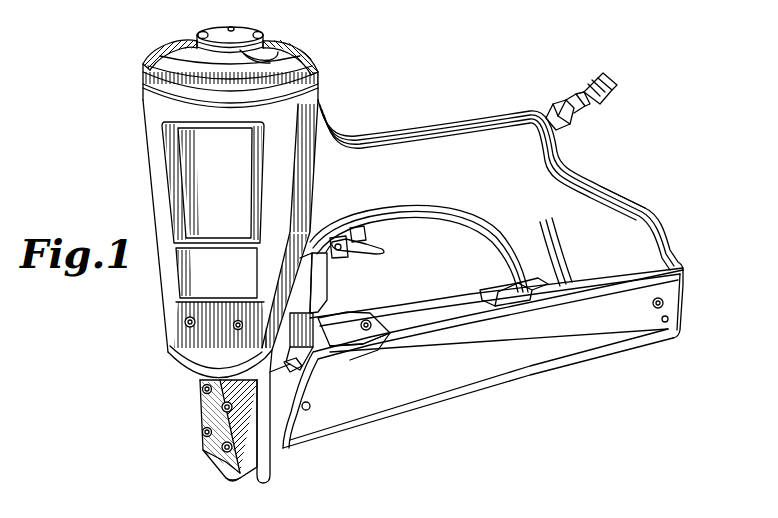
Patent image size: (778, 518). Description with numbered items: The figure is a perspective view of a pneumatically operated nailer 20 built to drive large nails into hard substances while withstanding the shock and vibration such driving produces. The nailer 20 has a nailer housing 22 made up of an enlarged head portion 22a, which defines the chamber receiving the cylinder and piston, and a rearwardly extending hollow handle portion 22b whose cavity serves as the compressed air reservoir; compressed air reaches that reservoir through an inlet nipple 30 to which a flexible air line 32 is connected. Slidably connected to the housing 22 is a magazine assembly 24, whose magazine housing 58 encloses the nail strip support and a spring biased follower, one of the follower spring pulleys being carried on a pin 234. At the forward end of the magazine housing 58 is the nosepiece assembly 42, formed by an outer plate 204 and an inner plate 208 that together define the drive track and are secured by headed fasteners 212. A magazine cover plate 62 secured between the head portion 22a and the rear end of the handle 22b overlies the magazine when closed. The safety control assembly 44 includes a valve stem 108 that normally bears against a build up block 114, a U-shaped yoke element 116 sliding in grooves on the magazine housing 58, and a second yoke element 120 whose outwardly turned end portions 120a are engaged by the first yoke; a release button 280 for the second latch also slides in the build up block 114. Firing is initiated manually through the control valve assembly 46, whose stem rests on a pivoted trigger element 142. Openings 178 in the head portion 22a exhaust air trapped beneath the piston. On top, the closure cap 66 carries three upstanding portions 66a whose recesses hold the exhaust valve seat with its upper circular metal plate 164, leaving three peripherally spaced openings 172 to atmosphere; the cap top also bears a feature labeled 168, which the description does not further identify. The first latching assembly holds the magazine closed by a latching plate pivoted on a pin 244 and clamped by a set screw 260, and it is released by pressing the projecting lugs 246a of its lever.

The pneumatically operated nailer 20 is at (458, 76).
The nailer housing 22 is at (370, 137).
The enlarged head portion 22a is at (152, 154).
The hollow handle portion 22b is at (622, 208).
The magazine assembly 24 is at (620, 355).
The inlet nipple 30 is at (548, 113).
The flexible air line 32 is at (603, 100).
The nosepiece assembly 42 is at (194, 414).
The safety control assembly 44 is at (338, 313).
The control valve assembly 46 is at (385, 236).
The magazine housing 58 is at (516, 371).
The magazine cover plate 62 is at (484, 276).
The closure cap 66 is at (175, 97).
The upstanding portions 66a is at (182, 44).
The valve stem 108 is at (324, 254).
The build up block 114 is at (360, 343).
The U-shaped yoke element 116 is at (270, 475).
The second U-shaped yoke element 120 is at (328, 288).
The outwardly turned end portions 120a is at (294, 367).
The trigger element 142 is at (380, 248).
The upper circular metal plate 164 is at (248, 30).
The deflector openings 168 is at (231, 27).
The peripherally spaced openings 172 is at (278, 50).
The openings 178 is at (186, 321).
The outer plate 204 is at (216, 467).
The inner plate 208 is at (236, 480).
The headed fasteners 212 is at (203, 399).
The pin 234 is at (311, 405).
The pin 244 is at (670, 318).
The projecting lugs 246a is at (520, 283).
The set screw 260 is at (666, 302).
The release button 280 is at (370, 321).